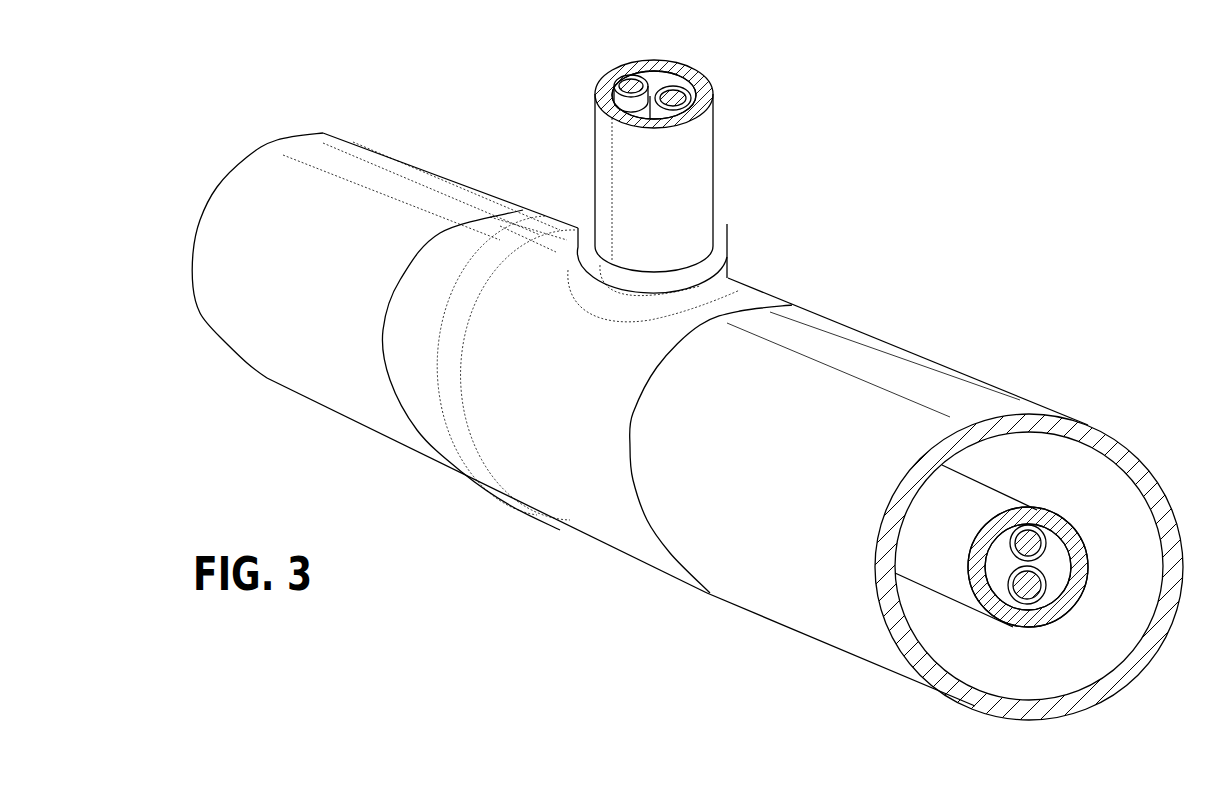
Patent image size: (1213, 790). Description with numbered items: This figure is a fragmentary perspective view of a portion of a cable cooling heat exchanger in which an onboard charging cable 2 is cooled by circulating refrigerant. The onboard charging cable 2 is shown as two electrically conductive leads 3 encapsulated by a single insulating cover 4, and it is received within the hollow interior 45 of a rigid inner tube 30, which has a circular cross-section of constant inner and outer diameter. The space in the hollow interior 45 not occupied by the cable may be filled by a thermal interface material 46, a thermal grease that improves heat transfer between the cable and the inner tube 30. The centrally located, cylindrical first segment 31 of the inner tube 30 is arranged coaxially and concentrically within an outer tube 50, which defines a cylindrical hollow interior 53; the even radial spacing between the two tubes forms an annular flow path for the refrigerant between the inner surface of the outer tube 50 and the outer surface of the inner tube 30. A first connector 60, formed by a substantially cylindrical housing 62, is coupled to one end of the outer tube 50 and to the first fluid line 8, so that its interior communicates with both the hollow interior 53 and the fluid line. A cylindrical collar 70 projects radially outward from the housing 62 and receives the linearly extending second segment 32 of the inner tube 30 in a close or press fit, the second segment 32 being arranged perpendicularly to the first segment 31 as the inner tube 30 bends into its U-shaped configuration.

The onboard charging cable 2 is at (1057, 505).
The leads 3 is at (630, 76).
The insulating cover 4 is at (1067, 563).
The first fluid line 8 is at (345, 405).
The inner tube 30 is at (588, 118).
The first segment 31 is at (980, 487).
The second segment 32 is at (595, 178).
The hollow interior 45 is at (1058, 598).
The thermal interface material 46 is at (1000, 588).
The outer tube 50 is at (940, 372).
The hollow interior 53 is at (1065, 674).
The first connector 60 is at (478, 400).
The housing 62 is at (565, 525).
The collar 70 is at (725, 250).